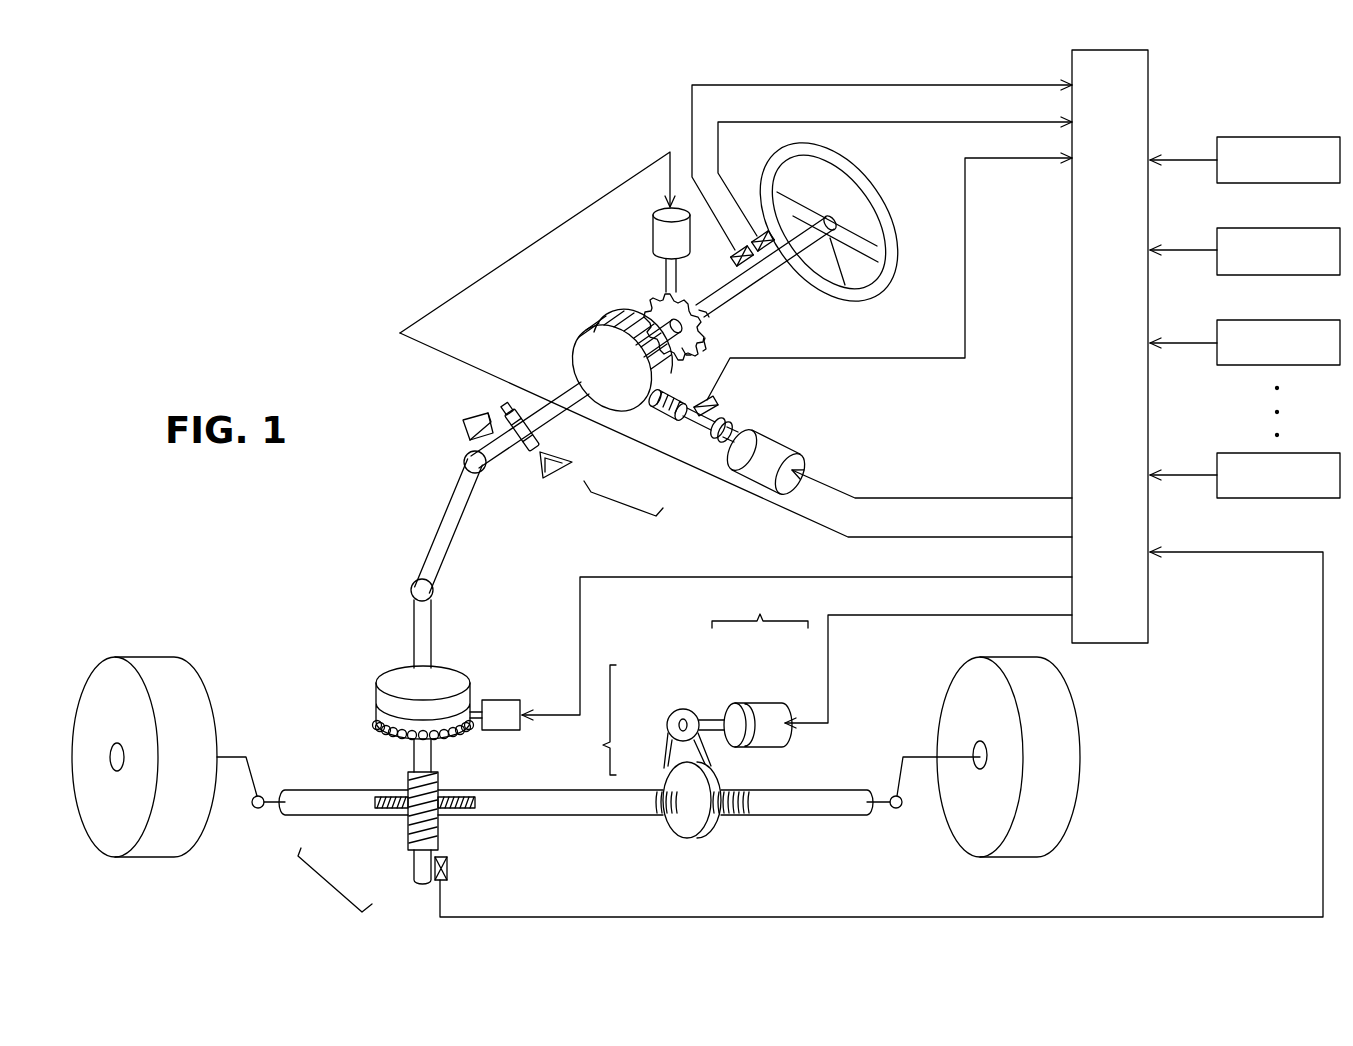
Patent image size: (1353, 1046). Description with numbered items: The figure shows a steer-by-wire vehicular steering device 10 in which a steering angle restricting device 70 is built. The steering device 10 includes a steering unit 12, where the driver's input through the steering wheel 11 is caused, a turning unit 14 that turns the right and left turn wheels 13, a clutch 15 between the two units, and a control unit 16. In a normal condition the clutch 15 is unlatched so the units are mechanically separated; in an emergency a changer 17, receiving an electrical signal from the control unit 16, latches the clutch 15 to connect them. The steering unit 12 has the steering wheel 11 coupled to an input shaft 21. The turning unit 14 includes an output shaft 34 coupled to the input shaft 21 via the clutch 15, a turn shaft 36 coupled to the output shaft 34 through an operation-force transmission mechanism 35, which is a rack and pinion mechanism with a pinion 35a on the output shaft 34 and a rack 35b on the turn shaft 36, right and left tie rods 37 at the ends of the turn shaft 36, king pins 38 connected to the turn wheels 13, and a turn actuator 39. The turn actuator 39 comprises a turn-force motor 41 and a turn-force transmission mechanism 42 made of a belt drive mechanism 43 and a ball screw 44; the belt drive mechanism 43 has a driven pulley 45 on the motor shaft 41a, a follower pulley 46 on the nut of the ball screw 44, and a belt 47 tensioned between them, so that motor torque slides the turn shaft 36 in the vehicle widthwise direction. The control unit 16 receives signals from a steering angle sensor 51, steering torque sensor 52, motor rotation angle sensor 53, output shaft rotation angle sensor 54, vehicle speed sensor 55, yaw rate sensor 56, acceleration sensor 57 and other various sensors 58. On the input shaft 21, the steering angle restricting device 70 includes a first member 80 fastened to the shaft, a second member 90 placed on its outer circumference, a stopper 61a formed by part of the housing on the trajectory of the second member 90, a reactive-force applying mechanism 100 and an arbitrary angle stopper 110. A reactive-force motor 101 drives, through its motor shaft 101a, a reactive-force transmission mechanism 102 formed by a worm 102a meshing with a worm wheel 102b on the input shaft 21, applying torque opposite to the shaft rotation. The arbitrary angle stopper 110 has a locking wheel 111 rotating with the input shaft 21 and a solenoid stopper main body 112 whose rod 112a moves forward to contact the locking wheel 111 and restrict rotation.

The vehicular steering device 10 is at (278, 185).
The steering wheel 11 is at (860, 190).
The steering unit 12 is at (836, 147).
The turn wheels 13 is at (110, 840).
The turning unit 14 is at (740, 855).
The clutch 15 is at (448, 683).
The control unit 16 is at (1130, 77).
The changer 17 is at (507, 700).
The input shaft 21 is at (776, 268).
The output shaft 34 is at (418, 752).
The operation-force transmission mechanism 35 is at (335, 884).
The pinion 35a is at (413, 835).
The rack 35b is at (385, 805).
The turn shaft 36 is at (548, 808).
The tie rods 37 is at (262, 810).
The king pins 38 is at (237, 757).
The turn actuator 39 is at (760, 606).
The turn-force motor 41 is at (760, 712).
The motor shaft 41a is at (718, 720).
The turn-force transmission mechanism 42 is at (740, 762).
The belt drive mechanism 43 is at (589, 720).
The ball screw 44 is at (667, 802).
The driven pulley 45 is at (670, 718).
The follower pulley 46 is at (678, 782).
The belt 47 is at (675, 752).
The steering angle sensor 51 is at (762, 233).
The steering torque sensor 52 is at (735, 256).
The motor rotation angle sensor 53 is at (722, 400).
The output shaft rotation angle sensor 54 is at (450, 865).
The vehicle speed sensor 55 is at (1285, 160).
The yaw rate sensor 56 is at (1287, 250).
The acceleration sensor 57 is at (1287, 343).
The other various sensors 58 is at (1287, 475).
The stopper 61a is at (470, 420).
The steering angle restricting device 70 is at (478, 385).
The first member 80 is at (515, 456).
The second member 90 is at (517, 400).
The reactive-force applying mechanism 100 is at (800, 430).
The reactive-force motor 101 is at (768, 484).
The motor shaft 101a is at (715, 455).
The reactive-force transmission mechanism 102 is at (623, 511).
The worm 102a is at (648, 413).
The worm wheel 102b is at (618, 405).
The arbitrary angle stopper 110 is at (645, 302).
The locking wheel 111 is at (703, 327).
The stopper main body 112 is at (652, 237).
The rod 112a is at (667, 282).